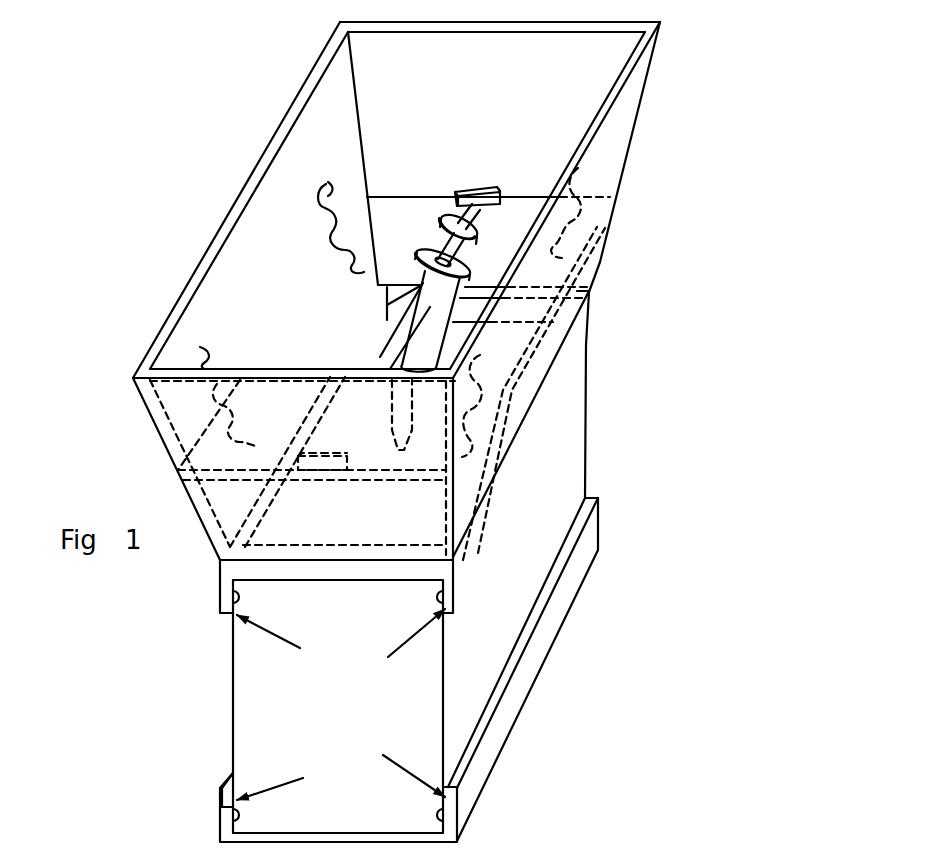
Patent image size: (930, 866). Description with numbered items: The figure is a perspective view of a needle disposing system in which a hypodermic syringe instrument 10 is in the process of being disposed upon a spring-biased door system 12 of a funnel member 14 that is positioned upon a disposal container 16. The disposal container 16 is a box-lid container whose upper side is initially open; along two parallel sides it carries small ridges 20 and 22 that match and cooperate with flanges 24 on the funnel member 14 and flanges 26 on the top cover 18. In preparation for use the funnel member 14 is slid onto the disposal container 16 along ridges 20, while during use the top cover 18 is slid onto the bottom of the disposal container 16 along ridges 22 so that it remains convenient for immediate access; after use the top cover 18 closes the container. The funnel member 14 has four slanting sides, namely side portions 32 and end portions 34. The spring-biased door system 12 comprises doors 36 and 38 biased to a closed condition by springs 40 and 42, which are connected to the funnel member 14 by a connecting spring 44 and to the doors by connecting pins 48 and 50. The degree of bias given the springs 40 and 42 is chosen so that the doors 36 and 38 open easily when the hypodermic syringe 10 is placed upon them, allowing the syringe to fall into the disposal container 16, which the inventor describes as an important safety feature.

The hypodermic syringe instrument 10 is at (430, 245).
The spring-biased door system 12 is at (327, 312).
The funnel member 14 is at (277, 137).
The disposal container 16 is at (228, 721).
The top cover 18 is at (222, 798).
The ridges 20 is at (224, 598).
The ridges 22 is at (222, 819).
The flanges 24 is at (300, 648).
The flanges 26 is at (303, 778).
The side portions 32 is at (178, 298).
The end portions 34 is at (490, 27).
The door 36 is at (412, 214).
The door 38 is at (519, 206).
The spring 40 is at (318, 200).
The spring 42 is at (600, 220).
The connecting spring 44 is at (328, 182).
The connecting pin 48 is at (365, 173).
The connecting pin 50 is at (593, 273).